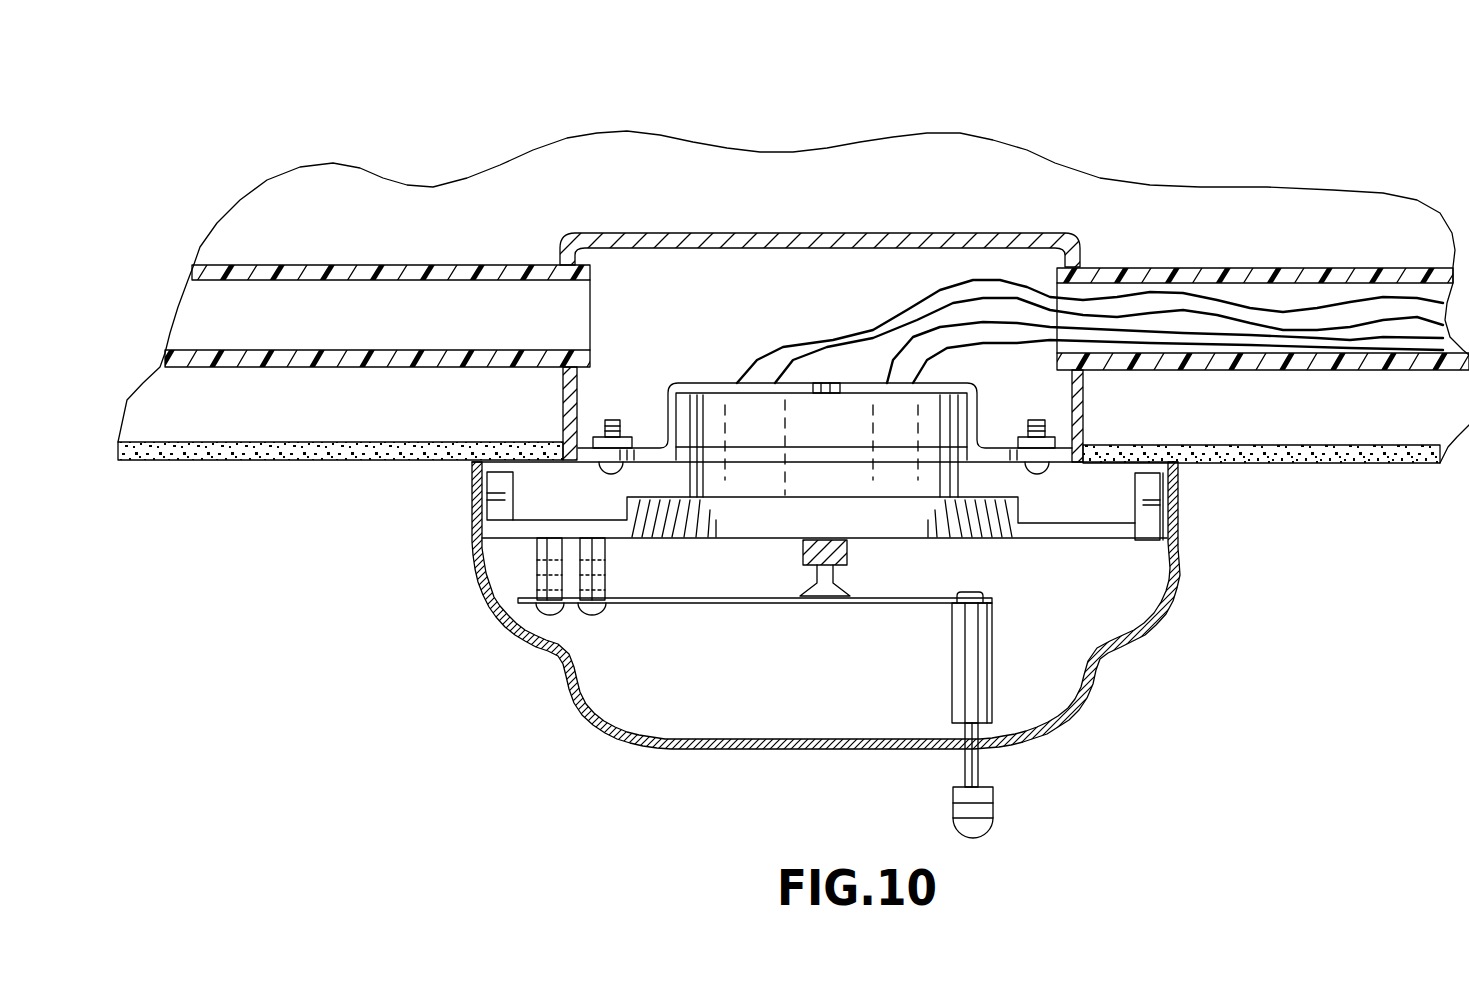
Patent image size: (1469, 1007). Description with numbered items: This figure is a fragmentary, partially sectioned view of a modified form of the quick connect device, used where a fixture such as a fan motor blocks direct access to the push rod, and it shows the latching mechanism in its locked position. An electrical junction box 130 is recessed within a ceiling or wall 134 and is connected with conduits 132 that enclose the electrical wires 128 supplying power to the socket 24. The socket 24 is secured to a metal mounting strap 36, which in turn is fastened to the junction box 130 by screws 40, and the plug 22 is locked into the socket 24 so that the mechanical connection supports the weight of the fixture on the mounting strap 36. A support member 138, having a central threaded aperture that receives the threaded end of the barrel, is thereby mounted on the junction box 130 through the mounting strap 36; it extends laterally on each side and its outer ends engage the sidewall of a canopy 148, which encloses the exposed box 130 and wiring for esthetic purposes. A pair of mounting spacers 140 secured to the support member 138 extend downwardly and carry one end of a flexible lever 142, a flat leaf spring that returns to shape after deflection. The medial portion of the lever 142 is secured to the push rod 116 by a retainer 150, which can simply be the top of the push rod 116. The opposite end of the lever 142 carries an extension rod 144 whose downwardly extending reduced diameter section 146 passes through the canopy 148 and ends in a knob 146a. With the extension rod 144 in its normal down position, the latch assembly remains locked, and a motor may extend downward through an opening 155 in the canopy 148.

The socket 24 is at (810, 292).
The plug 22 is at (738, 494).
The mounting strap 36 is at (825, 397).
The screws 40 is at (820, 425).
The push rod 116 is at (776, 564).
The electrical wires 128 is at (1090, 330).
The electrical junction box 130 is at (820, 211).
The conduits 132 is at (1263, 284).
The ceiling or wall 134 is at (779, 505).
The support member 138 is at (838, 542).
The mounting spacers 140 is at (497, 610).
The flexible lever 142 is at (755, 642).
The extension rod 144 is at (921, 657).
The reduced diameter section 146 is at (1054, 770).
The knob 146a is at (1045, 850).
The canopy 148 is at (826, 670).
The retainer 150 is at (809, 618).
The opening 155 is at (842, 745).